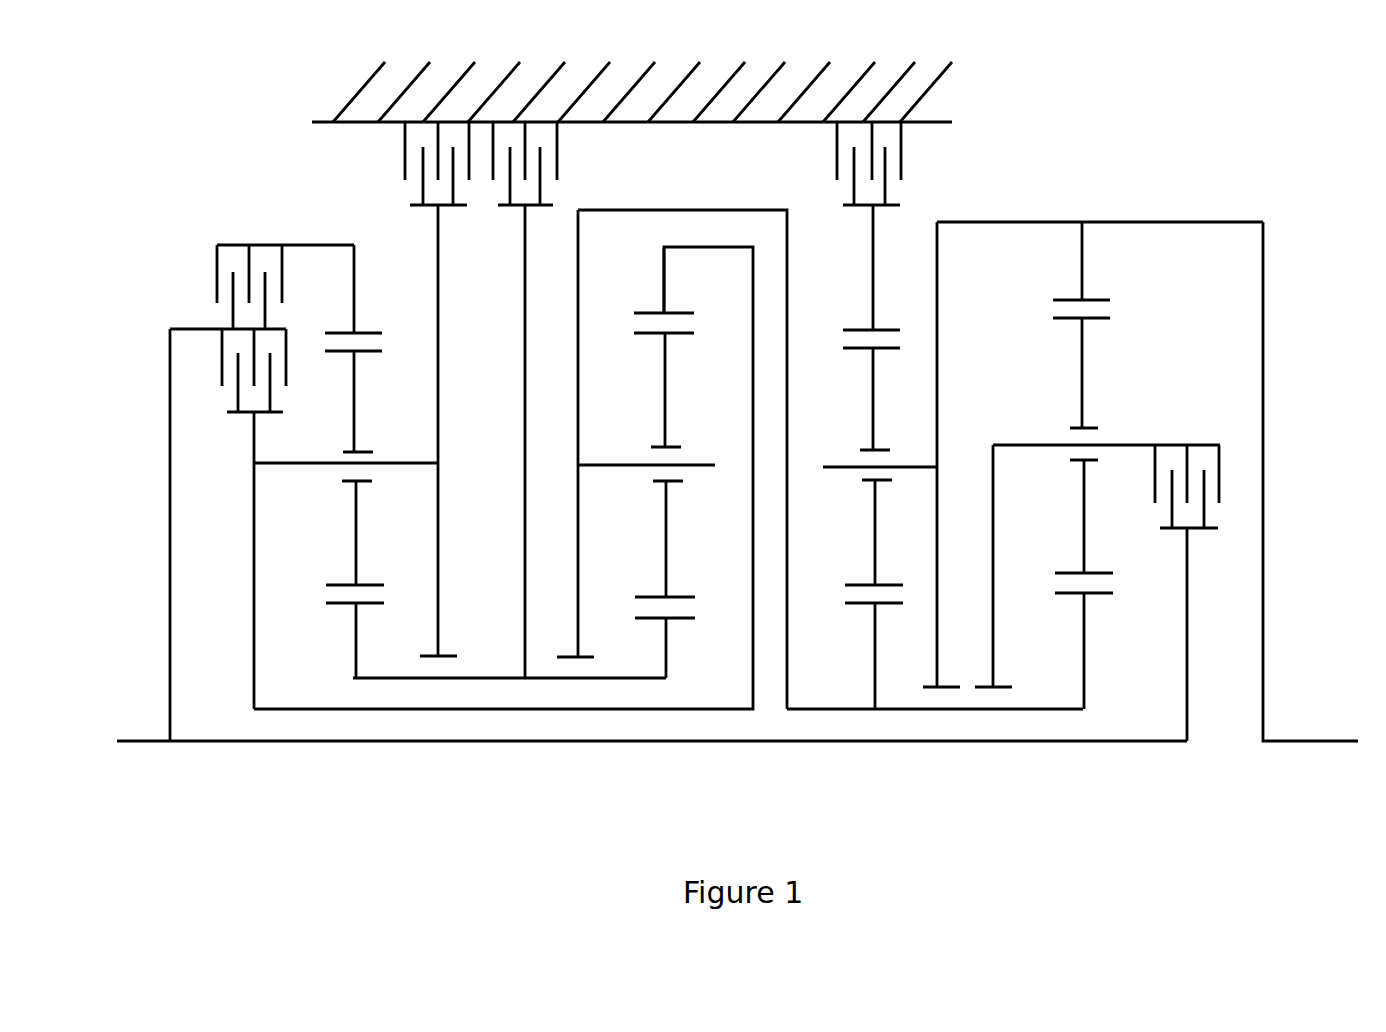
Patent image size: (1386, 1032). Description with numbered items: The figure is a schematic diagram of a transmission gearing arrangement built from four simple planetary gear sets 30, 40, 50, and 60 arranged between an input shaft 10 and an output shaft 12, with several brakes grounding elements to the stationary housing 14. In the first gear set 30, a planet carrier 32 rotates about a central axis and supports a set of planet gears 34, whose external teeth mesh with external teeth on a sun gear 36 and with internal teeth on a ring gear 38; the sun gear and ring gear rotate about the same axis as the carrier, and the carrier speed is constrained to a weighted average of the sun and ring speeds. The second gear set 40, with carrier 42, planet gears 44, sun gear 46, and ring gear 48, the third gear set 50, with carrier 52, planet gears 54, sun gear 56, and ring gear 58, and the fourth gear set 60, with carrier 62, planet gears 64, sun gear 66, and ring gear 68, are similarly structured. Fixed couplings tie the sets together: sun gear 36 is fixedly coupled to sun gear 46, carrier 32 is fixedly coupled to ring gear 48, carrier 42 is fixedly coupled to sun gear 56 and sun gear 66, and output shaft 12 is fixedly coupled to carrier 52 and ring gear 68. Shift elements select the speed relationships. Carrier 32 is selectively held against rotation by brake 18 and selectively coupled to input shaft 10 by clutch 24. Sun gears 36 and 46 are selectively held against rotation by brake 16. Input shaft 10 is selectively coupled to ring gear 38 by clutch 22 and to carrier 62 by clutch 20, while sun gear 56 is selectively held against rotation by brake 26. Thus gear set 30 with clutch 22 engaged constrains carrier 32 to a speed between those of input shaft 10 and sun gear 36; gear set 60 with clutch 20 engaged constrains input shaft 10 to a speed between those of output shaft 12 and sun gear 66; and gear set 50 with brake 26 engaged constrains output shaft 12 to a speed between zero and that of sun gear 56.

The input shaft 10 is at (140, 741).
The output shaft 12 is at (1315, 742).
The transmission housing 14 is at (368, 85).
The brake 16 is at (557, 155).
The brake 18 is at (405, 158).
The clutch 20 is at (1202, 448).
The clutch 22 is at (217, 270).
The clutch 24 is at (222, 353).
The brake 26 is at (901, 140).
The planetary gear set 30 is at (503, 527).
The planet carrier 32 is at (440, 438).
The planet gears 34 is at (357, 422).
The sun gear 36 is at (353, 660).
The ring gear 38 is at (354, 295).
The planetary gear set 40 is at (656, 506).
The carrier 42 is at (575, 325).
The planet gears 44 is at (665, 413).
The sun gear 46 is at (665, 642).
The ring gear 48 is at (663, 280).
The planetary gear set 50 is at (1025, 512).
The carrier 52 is at (937, 312).
The planet gears 54 is at (873, 402).
The sun gear 56 is at (875, 642).
The ring gear 58 is at (873, 277).
The planetary gear set 60 is at (1106, 626).
The carrier 62 is at (1028, 443).
The planet gears 64 is at (1085, 390).
The sun gear 66 is at (1085, 647).
The ring gear 68 is at (1082, 253).